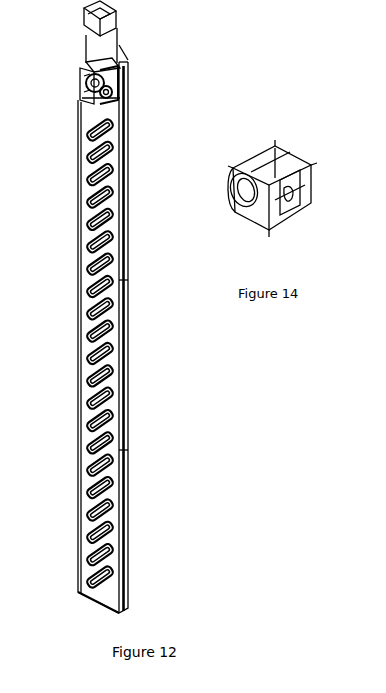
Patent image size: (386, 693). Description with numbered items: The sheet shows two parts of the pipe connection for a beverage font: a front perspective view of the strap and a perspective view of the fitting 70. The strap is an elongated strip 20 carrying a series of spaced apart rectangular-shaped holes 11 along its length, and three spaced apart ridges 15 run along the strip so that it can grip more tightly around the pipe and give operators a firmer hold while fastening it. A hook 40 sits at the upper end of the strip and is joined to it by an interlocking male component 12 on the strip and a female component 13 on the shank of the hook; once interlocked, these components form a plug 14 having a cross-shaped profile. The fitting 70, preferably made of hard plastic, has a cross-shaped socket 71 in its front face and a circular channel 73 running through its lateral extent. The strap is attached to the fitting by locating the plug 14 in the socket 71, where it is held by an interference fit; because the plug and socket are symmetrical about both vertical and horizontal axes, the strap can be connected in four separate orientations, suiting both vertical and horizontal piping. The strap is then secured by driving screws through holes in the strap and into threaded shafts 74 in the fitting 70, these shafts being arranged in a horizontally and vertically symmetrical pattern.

In FIG. 12, the rectangular-shaped holes 11 is at (80, 121).
In FIG. 12, the male component 12 is at (126, 166).
In FIG. 12, the female component 13 is at (128, 289).
In FIG. 12, the plug 14 is at (127, 52).
In FIG. 12, the ridges 15 is at (121, 453).
In FIG. 12, the strap body 20 is at (128, 389).
In FIG. 12, the hook 40 is at (116, 14).
In FIG. 14, the fitting 70 is at (288, 158).
In FIG. 14, the cross-shaped socket 71 is at (310, 190).
In FIG. 14, the circular channel 73 is at (230, 182).
In FIG. 14, the threaded shafts 74 is at (305, 163).